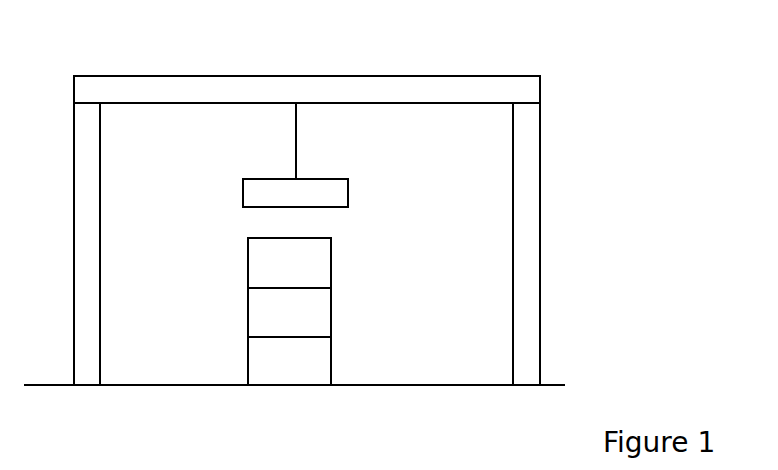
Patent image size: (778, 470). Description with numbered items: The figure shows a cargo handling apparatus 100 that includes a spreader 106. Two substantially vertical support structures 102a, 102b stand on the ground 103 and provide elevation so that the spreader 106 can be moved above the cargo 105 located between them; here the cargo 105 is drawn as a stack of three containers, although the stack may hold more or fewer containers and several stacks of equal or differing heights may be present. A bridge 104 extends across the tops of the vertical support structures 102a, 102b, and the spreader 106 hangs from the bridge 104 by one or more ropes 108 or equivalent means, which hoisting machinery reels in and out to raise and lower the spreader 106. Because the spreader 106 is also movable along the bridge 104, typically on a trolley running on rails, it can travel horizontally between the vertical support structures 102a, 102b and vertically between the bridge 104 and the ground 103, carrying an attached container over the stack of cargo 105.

The cargo handling apparatus 100 is at (570, 366).
The vertical support structure 102a is at (101, 360).
The vertical support structure 102b is at (512, 358).
The ground 103 is at (294, 413).
The bridge 104 is at (448, 76).
The cargo 105 is at (248, 275).
The spreader 106 is at (348, 197).
The rope 108 is at (296, 164).